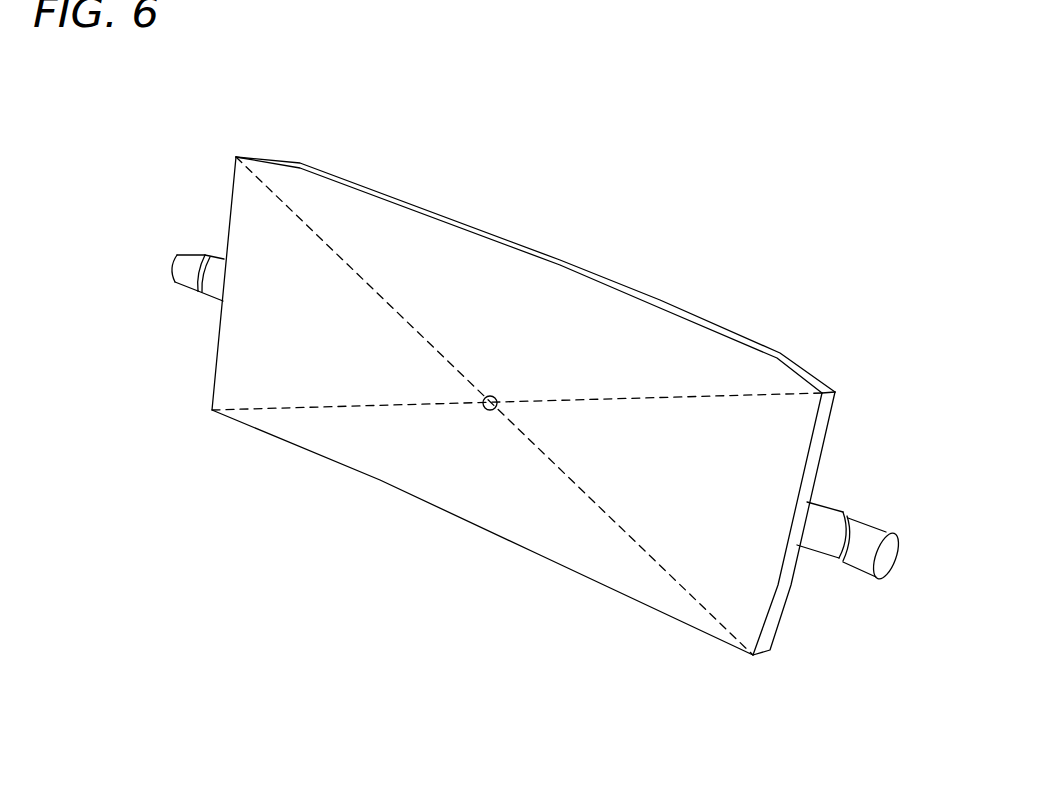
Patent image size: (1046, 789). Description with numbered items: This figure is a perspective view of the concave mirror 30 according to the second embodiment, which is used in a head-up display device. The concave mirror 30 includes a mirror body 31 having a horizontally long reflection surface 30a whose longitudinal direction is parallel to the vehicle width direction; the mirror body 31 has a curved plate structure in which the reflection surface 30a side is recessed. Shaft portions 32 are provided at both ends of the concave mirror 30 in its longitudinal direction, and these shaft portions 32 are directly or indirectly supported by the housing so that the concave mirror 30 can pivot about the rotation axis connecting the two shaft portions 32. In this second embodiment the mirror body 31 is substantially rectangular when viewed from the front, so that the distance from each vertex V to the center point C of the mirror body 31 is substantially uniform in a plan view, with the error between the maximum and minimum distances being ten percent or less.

The concave mirror 30 is at (720, 186).
The mirror body 31 is at (376, 218).
The reflection surface 30a is at (518, 513).
The shaft portion 32 is at (183, 265).
The center point C is at (487, 411).
The vertex V is at (236, 157).